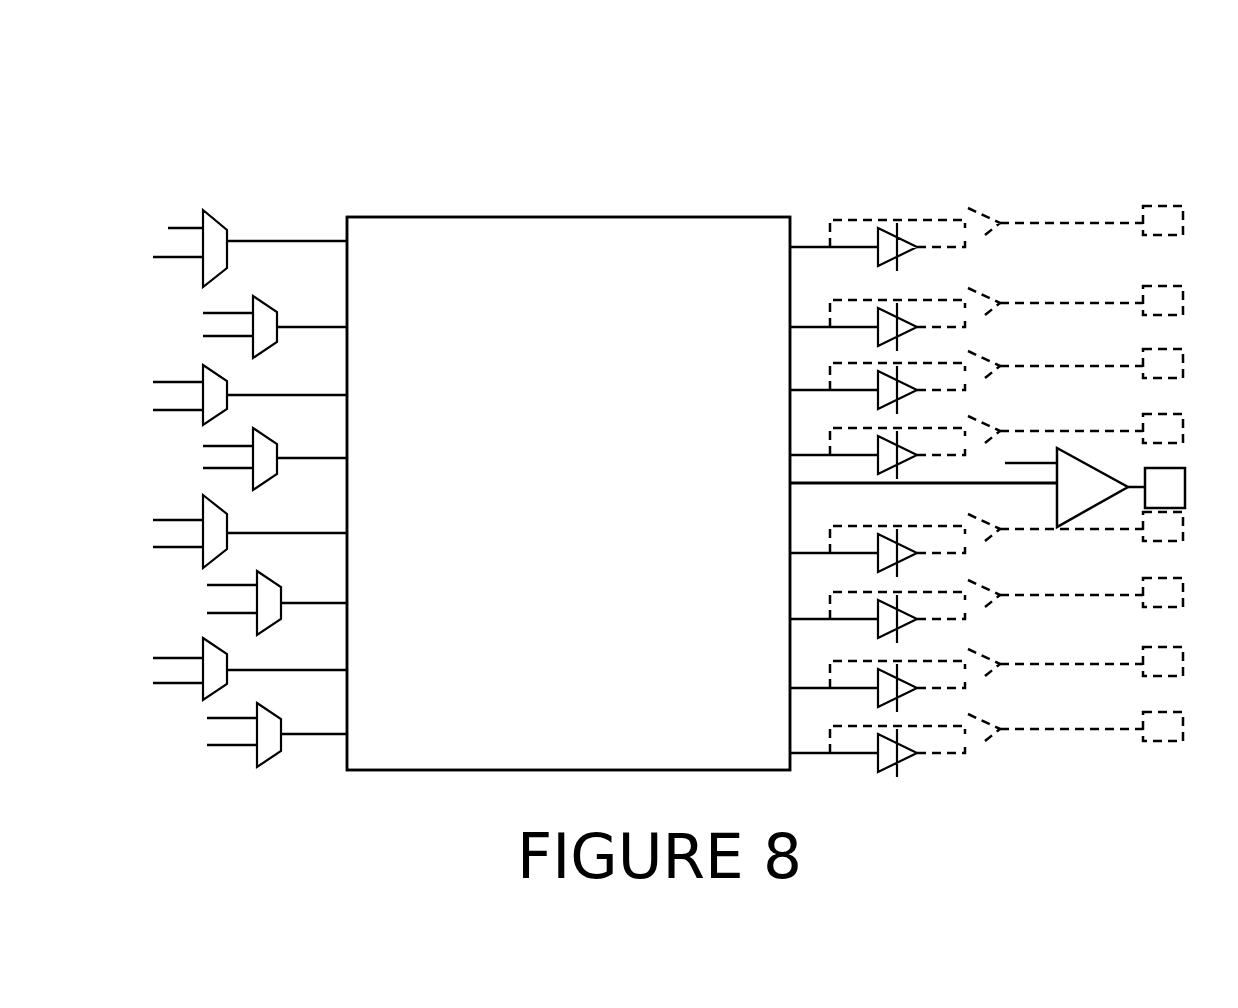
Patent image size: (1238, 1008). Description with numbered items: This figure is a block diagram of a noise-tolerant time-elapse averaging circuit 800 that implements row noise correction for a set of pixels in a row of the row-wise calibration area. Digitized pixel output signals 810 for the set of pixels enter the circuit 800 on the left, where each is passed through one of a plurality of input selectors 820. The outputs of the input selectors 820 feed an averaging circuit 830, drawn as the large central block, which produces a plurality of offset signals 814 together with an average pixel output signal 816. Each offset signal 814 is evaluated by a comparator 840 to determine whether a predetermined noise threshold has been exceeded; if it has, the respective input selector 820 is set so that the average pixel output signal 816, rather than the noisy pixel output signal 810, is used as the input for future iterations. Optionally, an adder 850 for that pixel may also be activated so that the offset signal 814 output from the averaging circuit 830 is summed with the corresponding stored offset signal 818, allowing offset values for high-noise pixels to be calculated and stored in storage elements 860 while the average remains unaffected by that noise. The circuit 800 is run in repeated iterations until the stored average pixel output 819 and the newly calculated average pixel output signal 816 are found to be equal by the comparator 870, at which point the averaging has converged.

The noise-tolerant time-elapse averaging circuit 800 is at (161, 164).
The digitized pixel output signals 810 is at (183, 515).
The offset signals 814 is at (834, 488).
The average pixel output signal 816 is at (583, 537).
The stored offset signal 818 is at (962, 211).
The stored average pixel output 819 is at (1124, 455).
The input selectors 820 is at (217, 218).
The averaging circuit 830 is at (545, 250).
The comparators 840 is at (877, 228).
The adders 850 is at (986, 211).
The storage element 860 is at (1184, 219).
The comparator 870 is at (1057, 527).